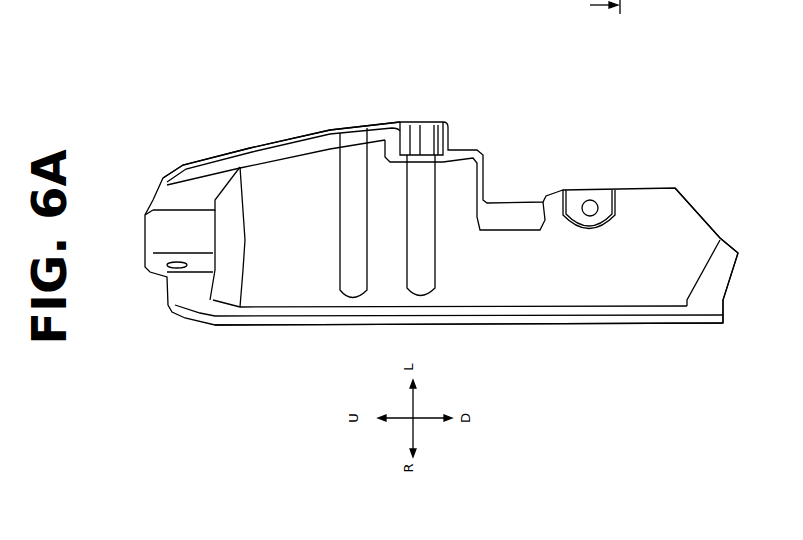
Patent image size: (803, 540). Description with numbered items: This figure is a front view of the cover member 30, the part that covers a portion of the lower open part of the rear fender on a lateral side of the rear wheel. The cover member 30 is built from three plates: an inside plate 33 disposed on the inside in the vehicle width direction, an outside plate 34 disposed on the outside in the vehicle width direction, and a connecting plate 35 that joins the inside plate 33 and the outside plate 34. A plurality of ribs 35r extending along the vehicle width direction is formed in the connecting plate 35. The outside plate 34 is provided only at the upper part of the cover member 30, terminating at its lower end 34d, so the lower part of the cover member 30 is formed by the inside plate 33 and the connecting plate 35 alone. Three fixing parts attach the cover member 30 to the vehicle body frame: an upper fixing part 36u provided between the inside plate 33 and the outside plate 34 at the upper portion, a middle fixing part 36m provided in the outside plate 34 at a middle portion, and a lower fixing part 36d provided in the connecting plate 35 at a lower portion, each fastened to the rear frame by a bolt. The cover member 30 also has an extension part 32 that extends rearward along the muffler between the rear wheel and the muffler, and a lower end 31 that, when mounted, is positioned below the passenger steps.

The cover member 30 is at (161, 161).
The lower end 31 is at (745, 258).
The extension part 32 is at (694, 206).
The inside plate 33 is at (237, 328).
The outside plate 34 is at (246, 132).
The lower end of the outside plate 34d is at (487, 158).
The connecting plate 35 is at (300, 170).
The ribs 35r is at (350, 232).
The middle fixing part 36m is at (420, 122).
The lower fixing part 36d is at (580, 180).
The upper fixing part 36u is at (147, 270).